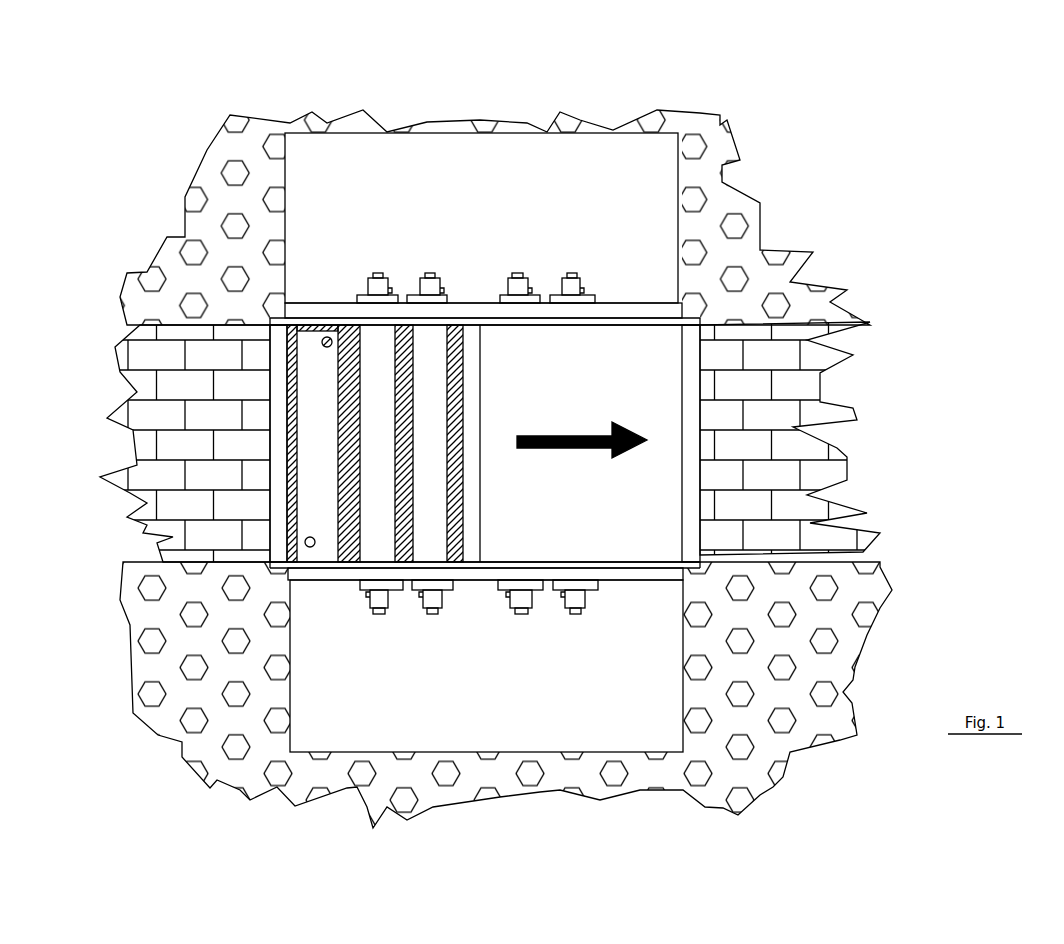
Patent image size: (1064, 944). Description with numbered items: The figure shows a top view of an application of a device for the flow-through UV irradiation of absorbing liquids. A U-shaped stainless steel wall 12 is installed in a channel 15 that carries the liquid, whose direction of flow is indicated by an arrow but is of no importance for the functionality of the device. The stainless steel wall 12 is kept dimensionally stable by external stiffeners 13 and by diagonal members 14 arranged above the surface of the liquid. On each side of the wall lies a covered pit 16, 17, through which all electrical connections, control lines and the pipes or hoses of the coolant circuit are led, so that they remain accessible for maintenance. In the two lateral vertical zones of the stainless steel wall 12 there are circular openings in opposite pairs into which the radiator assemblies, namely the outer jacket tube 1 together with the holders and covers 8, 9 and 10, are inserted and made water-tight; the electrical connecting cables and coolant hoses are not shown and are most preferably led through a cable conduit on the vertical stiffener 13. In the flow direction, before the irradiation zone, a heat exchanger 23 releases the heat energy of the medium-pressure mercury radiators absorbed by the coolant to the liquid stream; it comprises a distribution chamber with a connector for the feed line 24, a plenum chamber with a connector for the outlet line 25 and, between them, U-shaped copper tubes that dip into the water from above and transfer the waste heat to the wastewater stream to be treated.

The outer jacket tube 1 is at (435, 340).
The holder 8 is at (357, 300).
The holder 9 is at (417, 290).
The cover 10 is at (430, 285).
The U-shaped stainless steel wall 12 is at (606, 320).
The external stiffener 13 is at (473, 300).
The diagonal member 14 is at (275, 330).
The channel 15 is at (120, 372).
The covered pit 16 is at (346, 728).
The covered pit 17 is at (432, 172).
The heat exchanger 23 is at (287, 325).
The feed line connector 24 is at (305, 542).
The outlet line connector 25 is at (322, 344).